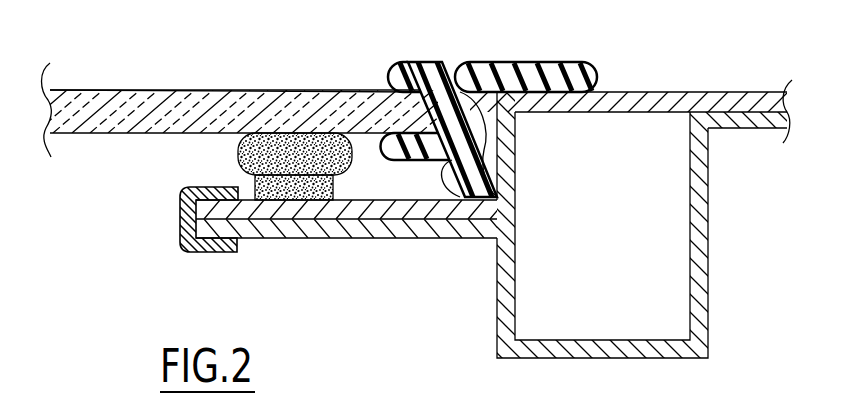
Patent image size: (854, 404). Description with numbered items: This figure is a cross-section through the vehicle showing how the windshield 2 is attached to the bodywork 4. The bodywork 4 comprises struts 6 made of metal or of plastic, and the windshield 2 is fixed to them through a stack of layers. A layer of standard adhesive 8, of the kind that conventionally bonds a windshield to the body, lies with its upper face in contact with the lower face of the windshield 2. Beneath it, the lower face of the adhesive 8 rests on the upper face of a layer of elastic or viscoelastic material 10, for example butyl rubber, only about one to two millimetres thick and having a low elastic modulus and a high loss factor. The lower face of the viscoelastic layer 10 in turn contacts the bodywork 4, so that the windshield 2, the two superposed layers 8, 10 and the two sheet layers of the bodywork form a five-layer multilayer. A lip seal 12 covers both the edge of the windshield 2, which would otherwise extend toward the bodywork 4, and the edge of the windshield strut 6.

The windshield 2 is at (167, 107).
The bodywork 4 is at (665, 89).
The strut 6 is at (507, 278).
The layer of standard adhesive 8 is at (305, 150).
The layer of elastic or viscoelastic material 10 is at (298, 200).
The lip seal 12 is at (492, 62).